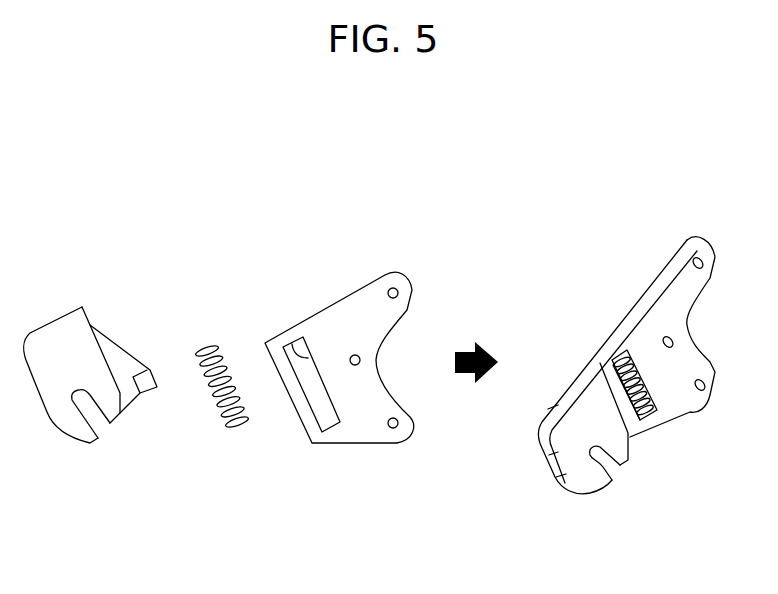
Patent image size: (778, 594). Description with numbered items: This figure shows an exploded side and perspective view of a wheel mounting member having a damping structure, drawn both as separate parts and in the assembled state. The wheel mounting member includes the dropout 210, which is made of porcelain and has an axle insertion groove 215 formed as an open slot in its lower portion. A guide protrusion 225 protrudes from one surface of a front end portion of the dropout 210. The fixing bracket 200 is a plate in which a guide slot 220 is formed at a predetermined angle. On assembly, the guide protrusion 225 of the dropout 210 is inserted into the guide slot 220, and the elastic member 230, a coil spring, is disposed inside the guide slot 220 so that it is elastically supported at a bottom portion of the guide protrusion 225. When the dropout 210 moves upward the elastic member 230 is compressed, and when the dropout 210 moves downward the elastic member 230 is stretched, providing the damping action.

The fixing bracket 200 is at (362, 418).
The dropout 210 is at (57, 342).
The axle insertion groove 215 is at (85, 405).
The guide slot 220 is at (287, 347).
The guide protrusion 225 is at (148, 380).
The elastic member 230 is at (213, 397).